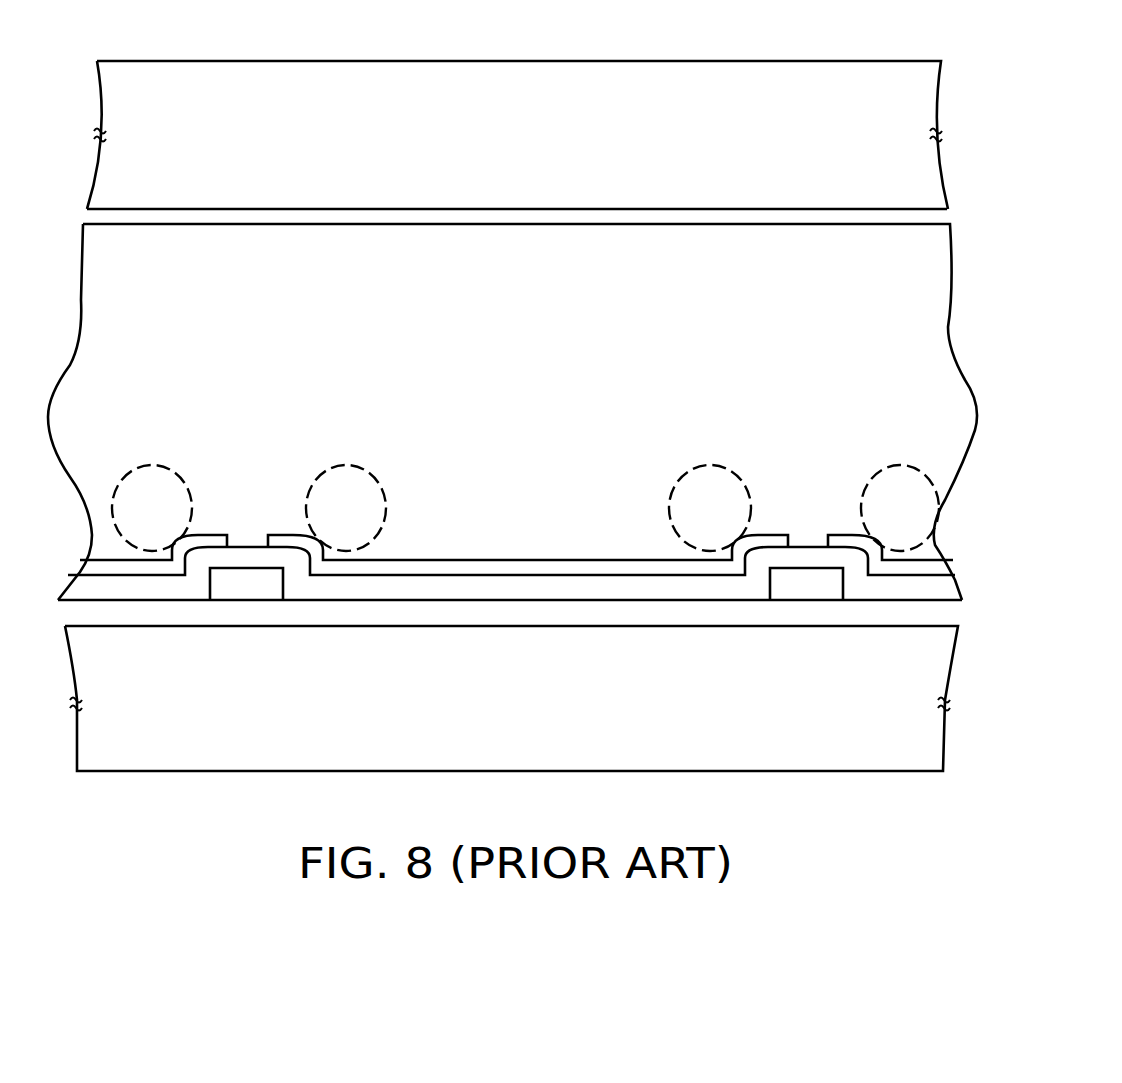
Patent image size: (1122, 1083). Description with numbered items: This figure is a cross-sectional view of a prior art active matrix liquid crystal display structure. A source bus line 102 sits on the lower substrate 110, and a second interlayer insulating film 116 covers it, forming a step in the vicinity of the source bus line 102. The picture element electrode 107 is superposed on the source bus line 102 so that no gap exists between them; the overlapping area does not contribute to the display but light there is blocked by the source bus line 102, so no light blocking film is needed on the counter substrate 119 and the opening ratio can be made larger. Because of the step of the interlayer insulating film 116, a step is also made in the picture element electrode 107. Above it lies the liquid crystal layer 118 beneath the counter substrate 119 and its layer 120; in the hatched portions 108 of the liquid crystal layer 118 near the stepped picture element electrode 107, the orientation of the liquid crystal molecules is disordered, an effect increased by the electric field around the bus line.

The source bus line 102 is at (258, 588).
The picture element electrode 107 is at (350, 572).
The portions of the liquid crystal layer 108 is at (358, 485).
The lower substrate 110 is at (923, 737).
The second interlayer insulating film 116 is at (443, 590).
The liquid crystal layer 118 is at (933, 368).
The counter substrate 119 is at (920, 157).
The counter electrode 120 is at (698, 213).